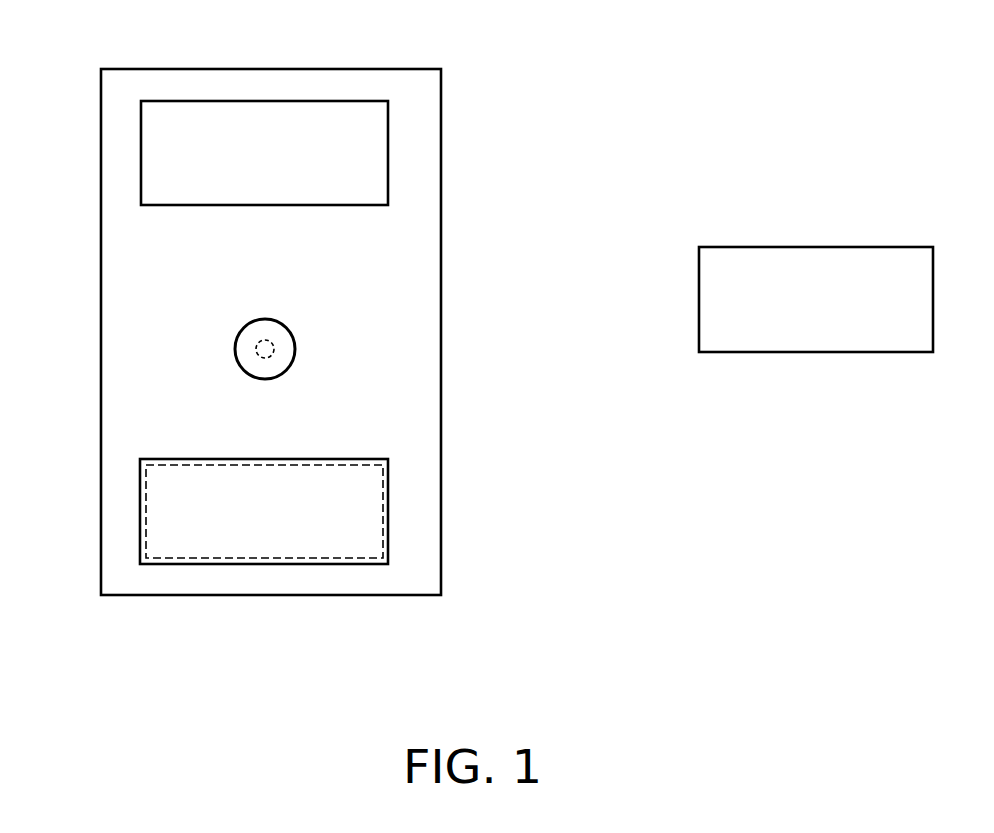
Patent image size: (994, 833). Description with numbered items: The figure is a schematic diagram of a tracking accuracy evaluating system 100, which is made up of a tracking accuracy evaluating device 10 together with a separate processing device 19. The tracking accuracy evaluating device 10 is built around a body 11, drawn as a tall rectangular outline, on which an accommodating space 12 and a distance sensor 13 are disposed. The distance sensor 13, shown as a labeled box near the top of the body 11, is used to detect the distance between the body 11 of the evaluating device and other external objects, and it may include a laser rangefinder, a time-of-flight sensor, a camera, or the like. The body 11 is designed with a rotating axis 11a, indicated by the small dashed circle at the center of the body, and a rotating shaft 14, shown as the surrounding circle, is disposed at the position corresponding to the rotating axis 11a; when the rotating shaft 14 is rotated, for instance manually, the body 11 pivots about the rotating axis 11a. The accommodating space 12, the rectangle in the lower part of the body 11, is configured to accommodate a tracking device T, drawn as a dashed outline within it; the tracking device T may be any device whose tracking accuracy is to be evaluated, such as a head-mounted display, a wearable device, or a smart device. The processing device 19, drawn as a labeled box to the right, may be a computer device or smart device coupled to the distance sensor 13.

The tracking accuracy evaluating device 10 is at (86, 58).
The body 11 is at (101, 137).
The rotating axis 11a is at (255, 349).
The accommodating space 12 is at (140, 511).
The distance sensor 13 is at (140, 163).
The rotating shaft 14 is at (242, 325).
The processing device 19 is at (817, 247).
The tracking device T is at (383, 512).
The tracking accuracy evaluating system 100 is at (68, 629).